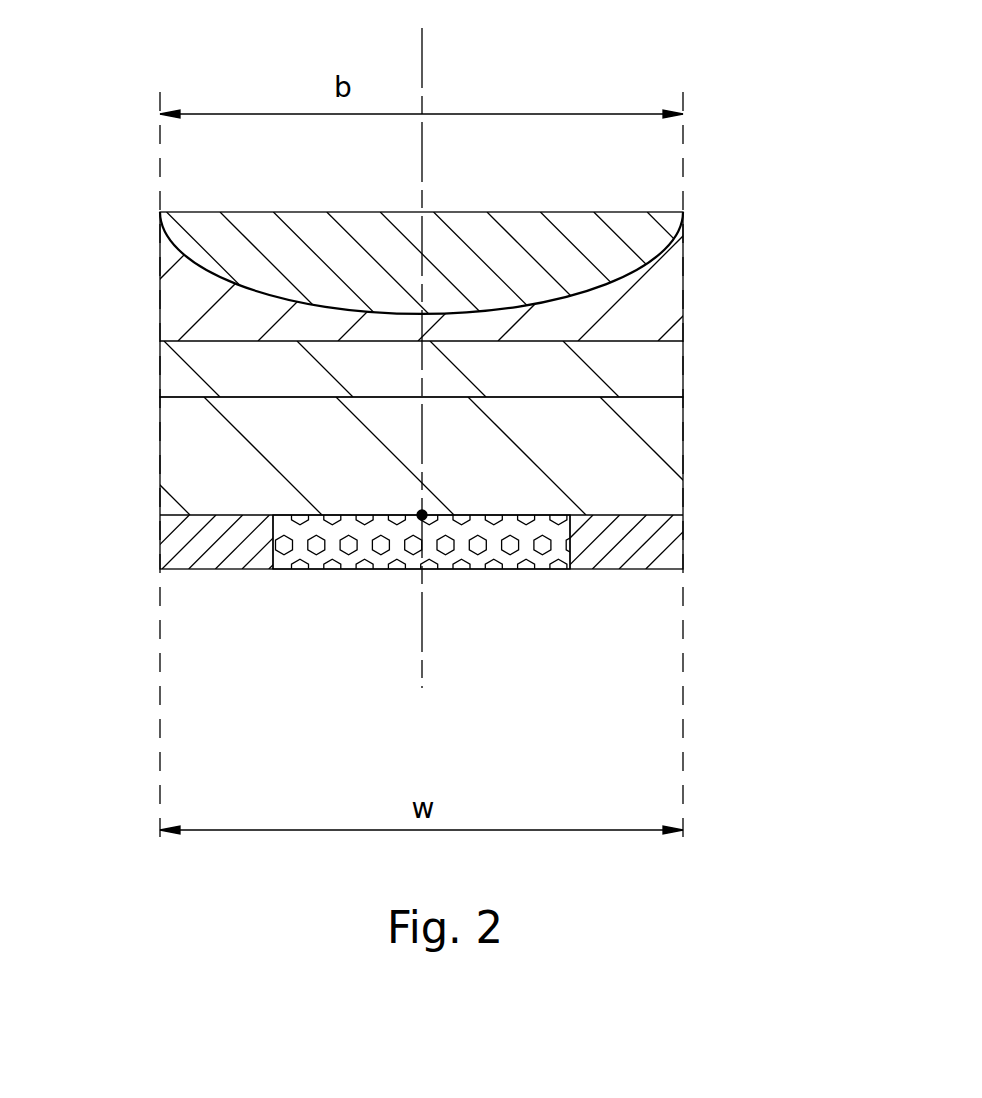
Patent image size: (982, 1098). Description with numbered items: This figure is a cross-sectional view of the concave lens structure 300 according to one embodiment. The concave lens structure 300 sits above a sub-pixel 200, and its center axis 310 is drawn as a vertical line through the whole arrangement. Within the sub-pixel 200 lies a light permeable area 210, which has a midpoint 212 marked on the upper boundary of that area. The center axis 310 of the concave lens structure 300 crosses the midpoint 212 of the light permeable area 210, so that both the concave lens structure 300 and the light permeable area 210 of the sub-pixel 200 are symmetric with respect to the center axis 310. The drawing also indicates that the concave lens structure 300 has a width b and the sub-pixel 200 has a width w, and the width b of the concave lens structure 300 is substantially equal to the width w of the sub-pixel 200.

The sub-pixel 200 is at (406, 552).
The light permeable area 210 is at (350, 570).
The midpoint 212 is at (614, 583).
The concave lens structure 300 is at (683, 243).
The center axis 310 is at (423, 59).